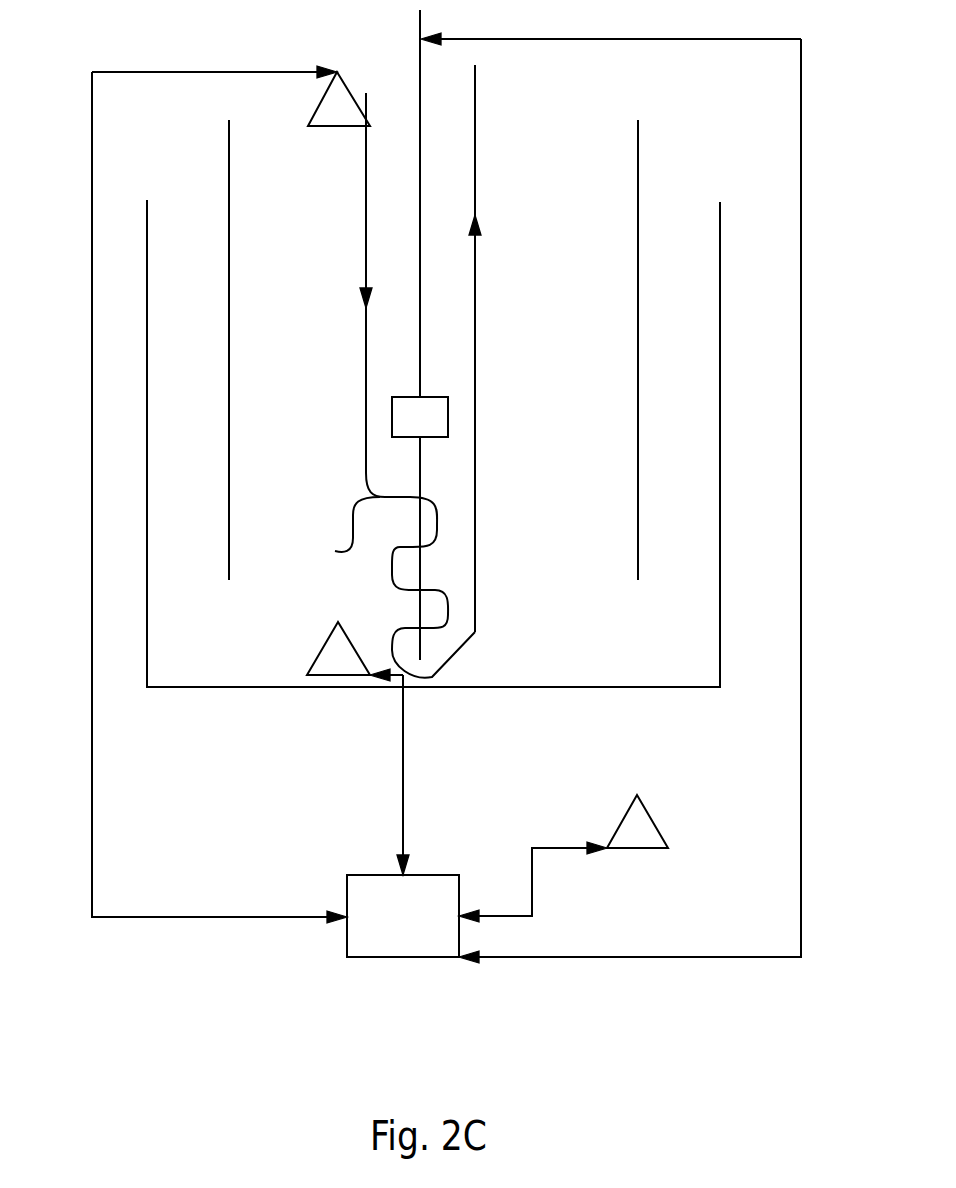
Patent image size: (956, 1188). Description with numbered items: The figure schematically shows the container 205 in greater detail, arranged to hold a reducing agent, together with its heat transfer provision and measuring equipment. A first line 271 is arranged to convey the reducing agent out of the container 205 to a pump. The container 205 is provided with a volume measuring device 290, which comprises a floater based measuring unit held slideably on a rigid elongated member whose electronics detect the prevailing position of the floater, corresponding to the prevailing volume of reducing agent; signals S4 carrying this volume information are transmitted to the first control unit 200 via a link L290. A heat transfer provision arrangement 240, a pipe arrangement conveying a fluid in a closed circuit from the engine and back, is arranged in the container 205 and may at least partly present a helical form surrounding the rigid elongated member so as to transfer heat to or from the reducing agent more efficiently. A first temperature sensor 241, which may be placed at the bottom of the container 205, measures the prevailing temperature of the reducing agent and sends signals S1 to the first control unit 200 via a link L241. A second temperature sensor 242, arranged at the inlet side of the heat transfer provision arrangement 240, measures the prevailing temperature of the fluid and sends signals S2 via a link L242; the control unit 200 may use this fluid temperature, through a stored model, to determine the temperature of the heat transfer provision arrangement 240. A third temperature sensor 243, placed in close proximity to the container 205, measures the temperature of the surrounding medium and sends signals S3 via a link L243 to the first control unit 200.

The first control unit 200 is at (384, 927).
The container 205 is at (585, 687).
The heat transfer provision arrangement 240 is at (335, 551).
The first temperature sensor 241 is at (307, 675).
The second temperature sensor 242 is at (337, 72).
The third temperature sensor 243 is at (668, 848).
The first line 271 is at (229, 150).
The volume measuring device 290 is at (448, 420).
The link L241 is at (403, 792).
The link L242 is at (92, 768).
The link L243 is at (532, 910).
The link L290 is at (640, 957).
The signals S1 is at (427, 767).
The signals S2 is at (214, 54).
The signals S3 is at (577, 876).
The signals S4 is at (611, 27).